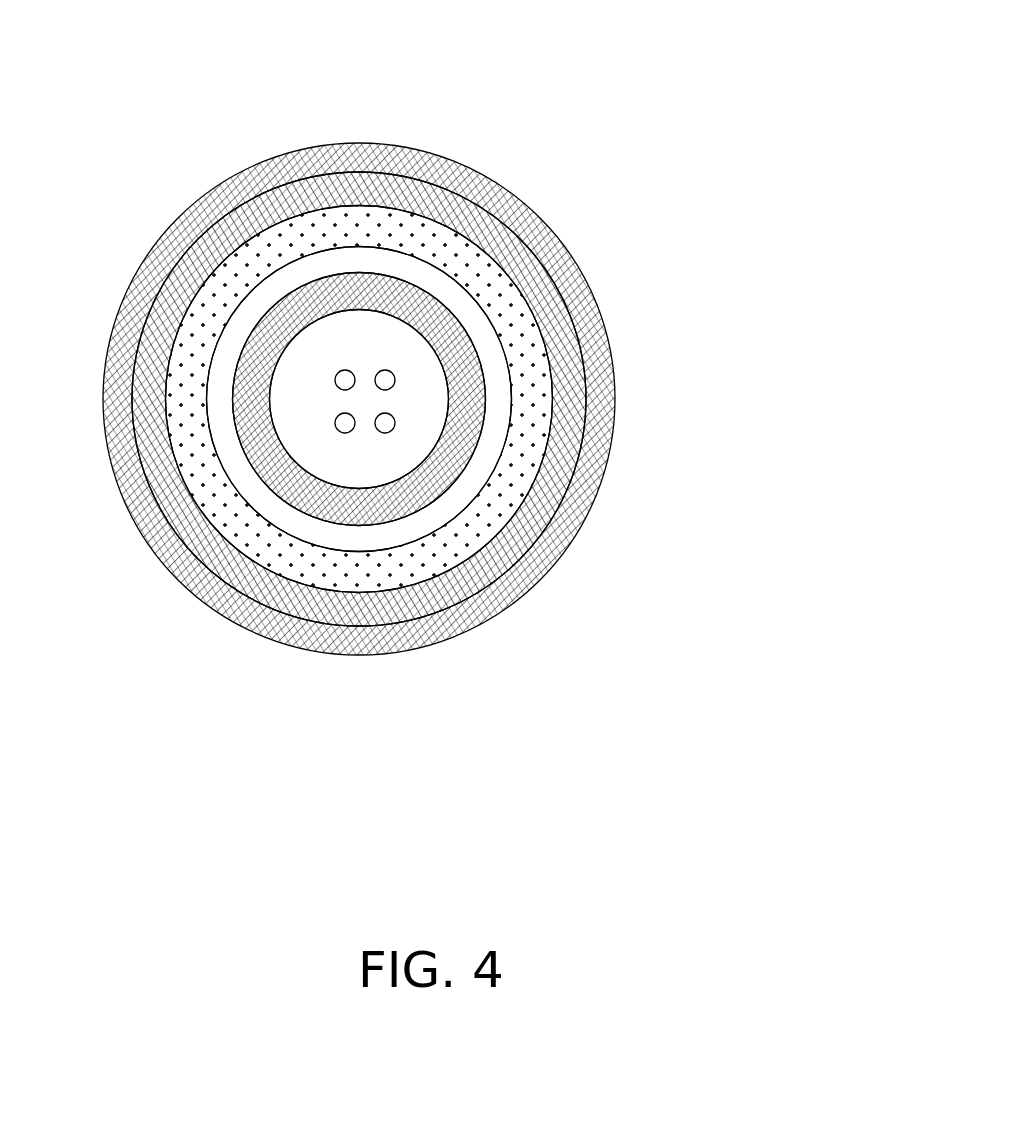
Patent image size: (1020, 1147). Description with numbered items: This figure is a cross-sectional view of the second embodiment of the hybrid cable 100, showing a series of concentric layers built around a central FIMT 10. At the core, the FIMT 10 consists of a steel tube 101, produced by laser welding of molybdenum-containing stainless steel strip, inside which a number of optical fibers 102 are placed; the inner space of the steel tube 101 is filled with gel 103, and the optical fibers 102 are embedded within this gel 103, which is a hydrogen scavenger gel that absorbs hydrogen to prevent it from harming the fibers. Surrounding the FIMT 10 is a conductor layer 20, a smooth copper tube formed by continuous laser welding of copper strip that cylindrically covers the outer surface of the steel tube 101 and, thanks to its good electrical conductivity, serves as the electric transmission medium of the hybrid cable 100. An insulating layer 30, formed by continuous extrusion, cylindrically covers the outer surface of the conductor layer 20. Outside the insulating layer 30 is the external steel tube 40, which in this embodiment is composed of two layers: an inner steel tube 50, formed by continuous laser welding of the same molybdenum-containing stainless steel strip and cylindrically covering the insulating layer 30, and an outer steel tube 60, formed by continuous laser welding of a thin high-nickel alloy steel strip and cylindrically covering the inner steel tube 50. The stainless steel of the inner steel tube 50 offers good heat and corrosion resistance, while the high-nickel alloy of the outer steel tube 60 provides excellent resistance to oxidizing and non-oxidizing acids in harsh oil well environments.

The hybrid cable 100 is at (388, 40).
The FIMT 10 is at (503, 399).
The steel tube 101 is at (470, 355).
The optical fibers 102 is at (391, 431).
The gel 103 is at (418, 407).
The conductor layer 20 is at (440, 510).
The insulating layer 30 is at (577, 266).
The external steel tube 40 is at (416, 391).
The inner steel tube 50 is at (521, 242).
The outer steel tube 60 is at (515, 198).